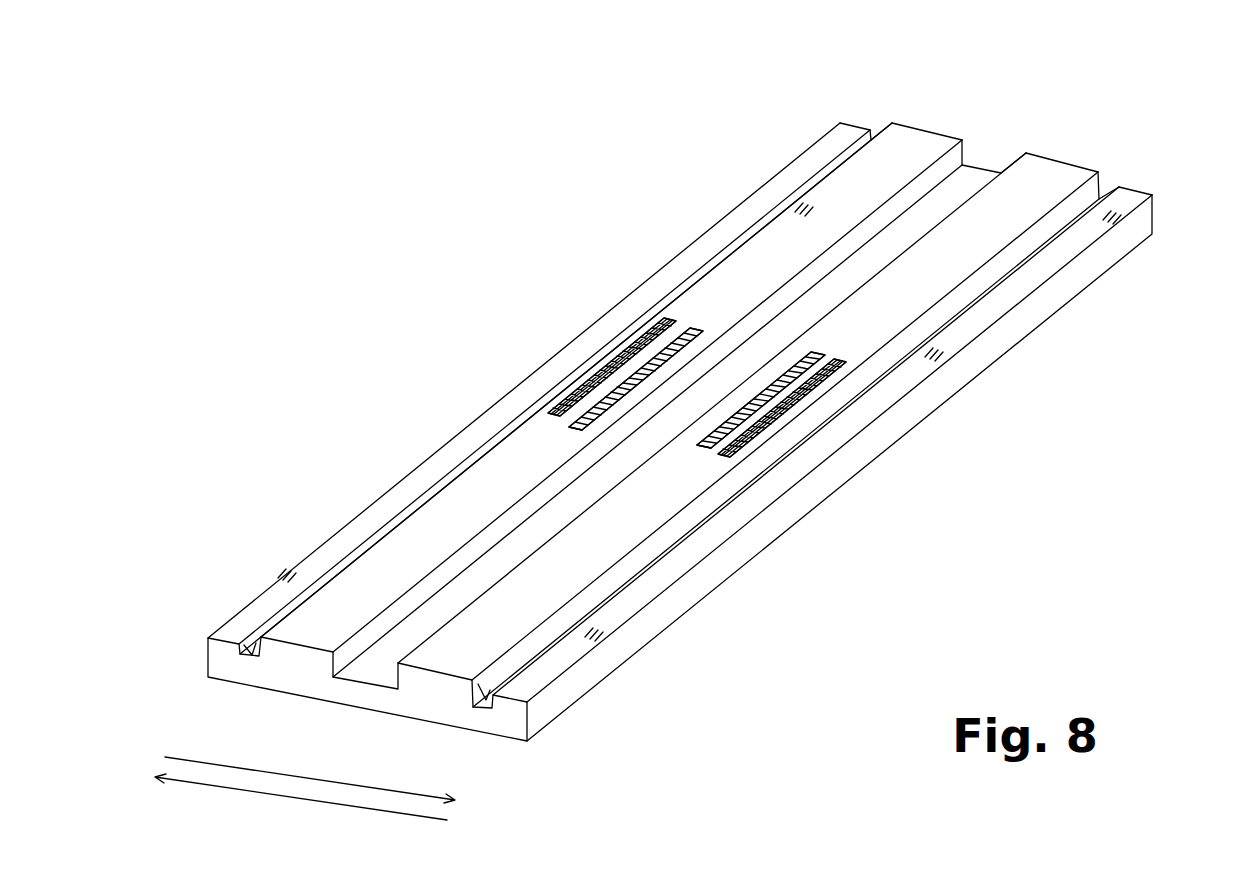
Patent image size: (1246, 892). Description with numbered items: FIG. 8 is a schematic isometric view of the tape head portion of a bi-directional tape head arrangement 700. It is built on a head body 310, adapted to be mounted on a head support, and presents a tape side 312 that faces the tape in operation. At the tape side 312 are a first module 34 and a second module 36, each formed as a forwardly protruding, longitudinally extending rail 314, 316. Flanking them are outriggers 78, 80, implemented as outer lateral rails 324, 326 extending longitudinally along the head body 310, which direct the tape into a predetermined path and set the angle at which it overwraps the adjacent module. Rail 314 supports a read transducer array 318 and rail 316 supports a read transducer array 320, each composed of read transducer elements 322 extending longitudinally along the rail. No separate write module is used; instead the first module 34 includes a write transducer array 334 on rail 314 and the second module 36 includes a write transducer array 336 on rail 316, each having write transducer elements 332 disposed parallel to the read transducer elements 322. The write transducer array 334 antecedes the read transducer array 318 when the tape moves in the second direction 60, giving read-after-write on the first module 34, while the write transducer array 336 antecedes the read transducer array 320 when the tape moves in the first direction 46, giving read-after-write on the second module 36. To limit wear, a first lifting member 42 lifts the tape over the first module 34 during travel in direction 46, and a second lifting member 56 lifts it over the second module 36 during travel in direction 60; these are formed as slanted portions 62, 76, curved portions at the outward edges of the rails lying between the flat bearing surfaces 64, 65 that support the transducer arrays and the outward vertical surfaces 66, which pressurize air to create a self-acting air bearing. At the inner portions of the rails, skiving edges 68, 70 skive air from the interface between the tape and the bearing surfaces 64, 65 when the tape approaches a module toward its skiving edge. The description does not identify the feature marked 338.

The tape head arrangement 700 is at (242, 528).
The head body 310 is at (1107, 272).
The tape side 312 is at (638, 262).
The rail 314 is at (927, 128).
The rail 316 is at (1080, 162).
The read transducer array 318 is at (603, 363).
The read transducer array 320 is at (782, 420).
The read transducer elements 322 is at (670, 325).
The write transducer elements 332 is at (697, 330).
The outer lateral rail 324 is at (843, 124).
The outer lateral rail 326 is at (1150, 193).
The write transducer array 334 is at (585, 418).
The write transducer array 336 is at (700, 448).
The central groove end 338 is at (950, 195).
The first module 34 is at (928, 107).
The second module 36 is at (1063, 145).
The first lifting member 42 is at (508, 425).
The first direction 46 is at (365, 785).
The second lifting member 56 is at (732, 475).
The second direction 60 is at (268, 795).
The slanted portion 62 is at (262, 643).
The flat bearing surface 64 is at (377, 573).
The flat bearing surface 65 is at (493, 622).
The outward vertical surfaces 66 is at (258, 646).
The skiving edge 68 is at (332, 660).
The skiving edge 70 is at (398, 672).
The slanted portion 76 is at (470, 683).
The outrigger 78 is at (857, 108).
The outrigger 80 is at (1147, 187).